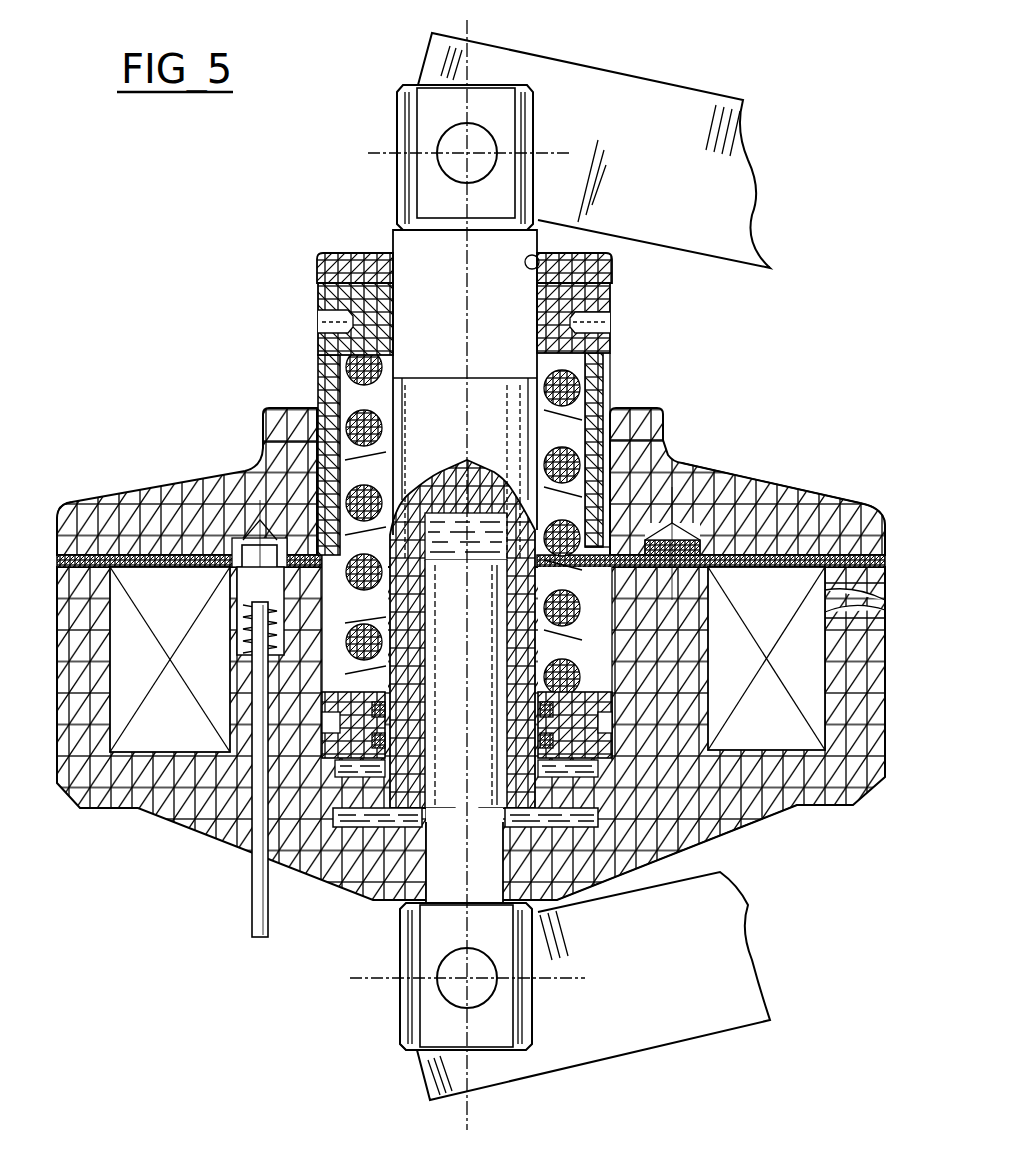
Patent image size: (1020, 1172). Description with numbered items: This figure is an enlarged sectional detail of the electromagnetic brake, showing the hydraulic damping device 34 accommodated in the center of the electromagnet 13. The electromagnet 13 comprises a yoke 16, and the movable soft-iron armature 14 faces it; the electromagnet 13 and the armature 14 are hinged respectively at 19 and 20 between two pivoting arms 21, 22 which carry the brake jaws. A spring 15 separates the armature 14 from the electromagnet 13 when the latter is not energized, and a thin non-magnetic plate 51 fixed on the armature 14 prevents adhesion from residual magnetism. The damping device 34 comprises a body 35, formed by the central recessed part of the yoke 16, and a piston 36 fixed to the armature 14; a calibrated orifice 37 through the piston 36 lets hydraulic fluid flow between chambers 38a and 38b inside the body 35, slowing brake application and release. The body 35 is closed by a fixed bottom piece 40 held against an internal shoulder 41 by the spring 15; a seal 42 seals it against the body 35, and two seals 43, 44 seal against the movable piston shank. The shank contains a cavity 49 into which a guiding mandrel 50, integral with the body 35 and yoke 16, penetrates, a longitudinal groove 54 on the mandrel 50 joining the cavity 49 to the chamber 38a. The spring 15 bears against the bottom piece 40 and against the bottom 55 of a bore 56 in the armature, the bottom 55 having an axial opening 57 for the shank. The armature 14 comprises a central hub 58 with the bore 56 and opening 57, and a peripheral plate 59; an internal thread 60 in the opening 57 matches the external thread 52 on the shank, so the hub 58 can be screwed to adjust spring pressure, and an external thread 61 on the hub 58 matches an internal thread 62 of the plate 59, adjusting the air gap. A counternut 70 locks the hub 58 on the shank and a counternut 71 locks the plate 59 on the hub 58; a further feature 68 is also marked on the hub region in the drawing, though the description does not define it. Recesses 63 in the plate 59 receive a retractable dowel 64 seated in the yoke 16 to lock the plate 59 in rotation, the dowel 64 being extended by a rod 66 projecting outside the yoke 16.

The electromagnet 13 is at (835, 808).
The armature 14 is at (152, 476).
The spring 15 is at (675, 512).
The yoke 16 is at (770, 815).
The hinge of the electromagnet 19 is at (473, 995).
The hinge of the armature 20 is at (467, 153).
The pivoting arm 21 is at (690, 1025).
The pivoting arm 22 is at (652, 80).
The damping device 34 is at (343, 638).
The body 35 is at (580, 863).
The piston 36 is at (378, 830).
The calibrated orifice 37 is at (652, 864).
The chamber 38a is at (600, 830).
The chamber 38b is at (322, 778).
The bottom piece 40 is at (370, 606).
The internal shoulder 41 is at (600, 763).
The seal 42 is at (612, 718).
The seal 43 is at (540, 738).
The seal 44 is at (548, 684).
The cavity 49 is at (440, 488).
The guiding mandrel 50 is at (535, 912).
The thin plate 51 is at (57, 540).
The external thread 52 is at (390, 245).
The longitudinal groove 54 is at (445, 900).
The bottom of the bore 55 is at (610, 356).
The bore 56 is at (607, 395).
The axial opening 57 is at (549, 238).
The central hub 58 is at (318, 352).
The peripheral plate 59 is at (800, 486).
The internal thread 60 is at (548, 255).
The external thread 61 is at (325, 395).
The internal thread 62 is at (278, 420).
The recesses 63 is at (740, 505).
The retractable dowel 64 is at (258, 560).
The rod 66 is at (252, 900).
The groove 68 is at (320, 322).
The counternut 70 is at (612, 262).
The counternut 71 is at (668, 420).